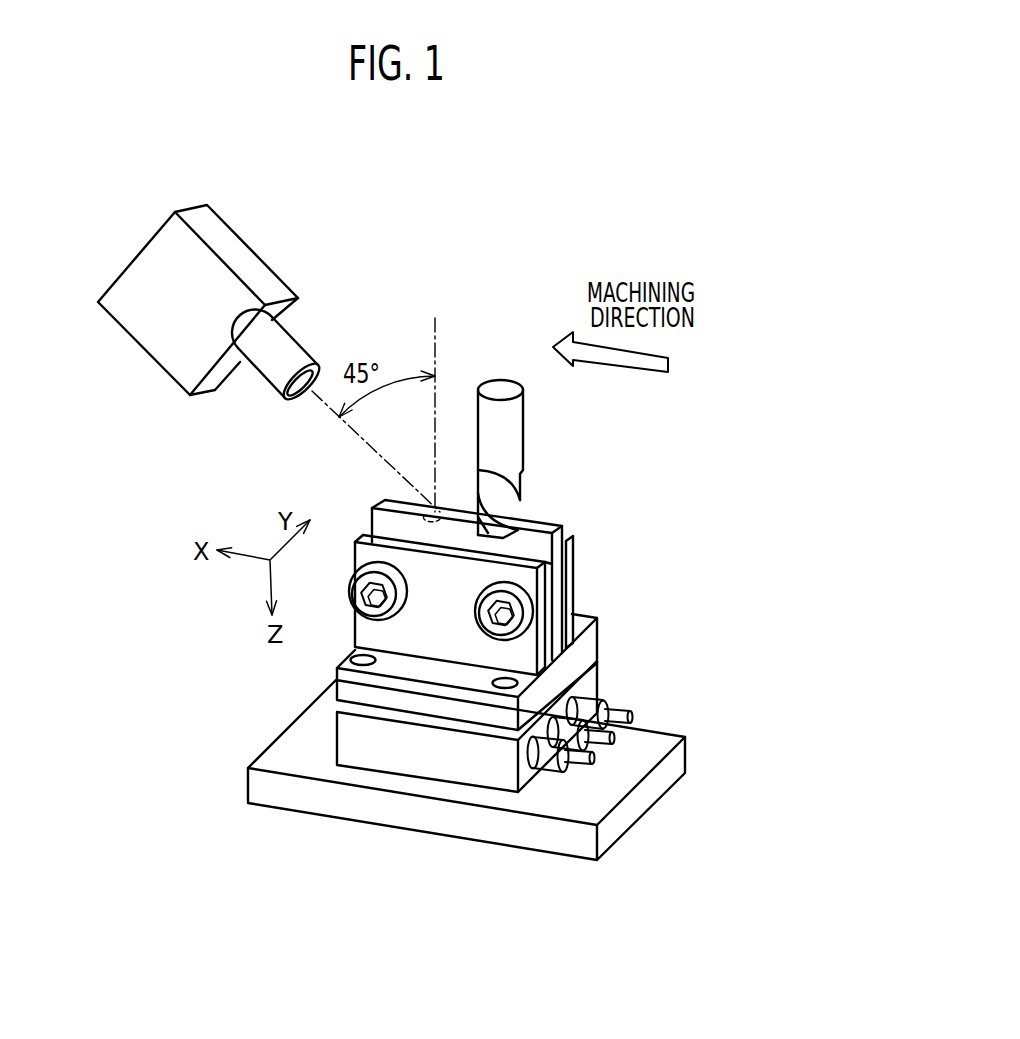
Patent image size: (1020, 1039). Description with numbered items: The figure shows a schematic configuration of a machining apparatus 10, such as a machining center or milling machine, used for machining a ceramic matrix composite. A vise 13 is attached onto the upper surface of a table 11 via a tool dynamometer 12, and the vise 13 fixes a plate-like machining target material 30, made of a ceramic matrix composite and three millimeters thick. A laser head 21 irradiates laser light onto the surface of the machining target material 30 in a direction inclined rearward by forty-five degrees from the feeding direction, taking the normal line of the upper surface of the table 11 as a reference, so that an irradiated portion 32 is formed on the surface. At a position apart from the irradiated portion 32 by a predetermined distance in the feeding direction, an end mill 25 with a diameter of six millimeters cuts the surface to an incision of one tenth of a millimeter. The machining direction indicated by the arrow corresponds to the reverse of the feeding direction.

The machining apparatus 10 is at (635, 502).
The table 11 is at (340, 812).
The tool dynamometer 12 is at (445, 767).
The vise 13 is at (590, 640).
The laser head 21 is at (178, 383).
The end mill 25 is at (517, 430).
The machining target material 30 is at (560, 567).
The irradiated portion 32 is at (433, 515).